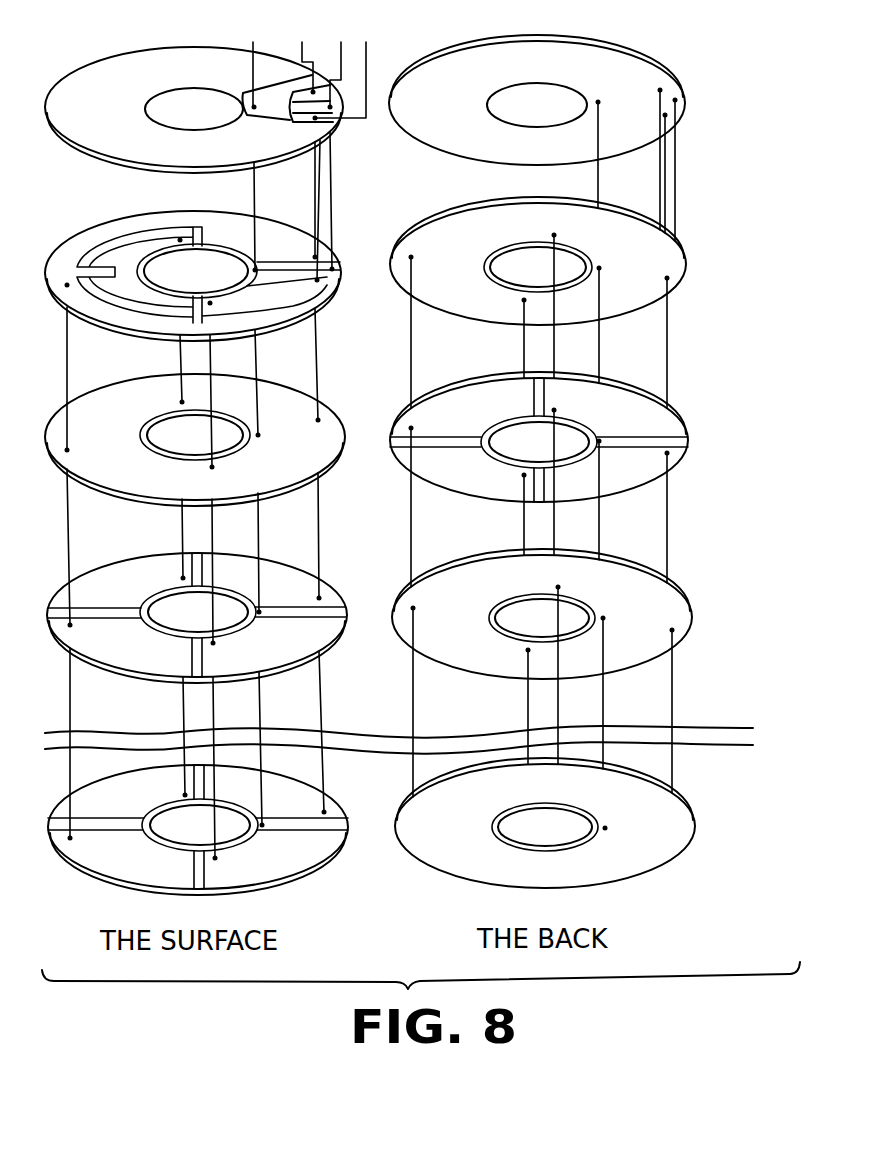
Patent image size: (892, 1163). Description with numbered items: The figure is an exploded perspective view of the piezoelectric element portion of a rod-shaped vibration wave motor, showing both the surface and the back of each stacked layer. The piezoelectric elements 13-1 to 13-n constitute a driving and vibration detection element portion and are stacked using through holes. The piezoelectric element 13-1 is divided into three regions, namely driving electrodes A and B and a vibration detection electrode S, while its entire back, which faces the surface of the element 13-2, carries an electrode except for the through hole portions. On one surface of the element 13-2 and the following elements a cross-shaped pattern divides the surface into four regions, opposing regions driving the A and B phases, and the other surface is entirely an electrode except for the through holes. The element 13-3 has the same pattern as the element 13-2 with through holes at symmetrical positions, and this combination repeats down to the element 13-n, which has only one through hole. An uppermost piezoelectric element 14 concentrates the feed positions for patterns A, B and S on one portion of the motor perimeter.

The uppermost piezoelectric element 14 is at (763, 17).
The piezoelectric element 13-1 is at (763, 190).
The piezoelectric element 13-2 is at (763, 360).
The piezoelectric element 13-3 is at (763, 530).
The piezoelectric element 13-n is at (763, 750).